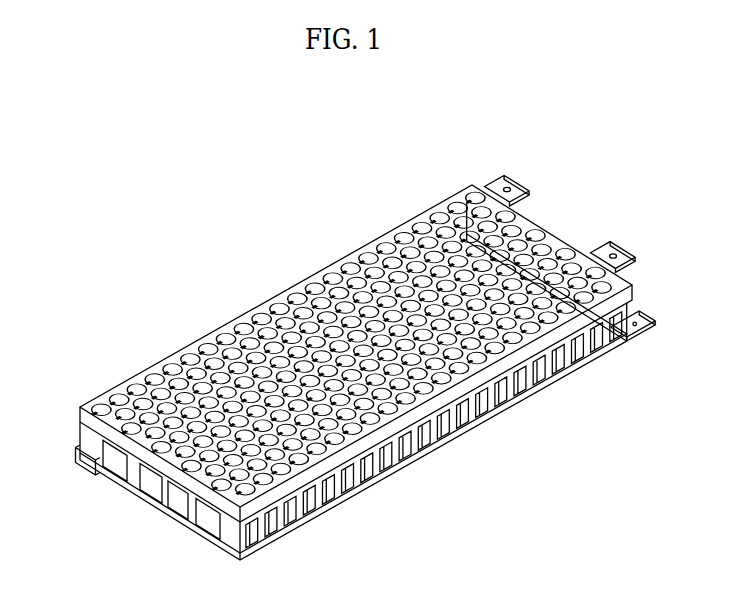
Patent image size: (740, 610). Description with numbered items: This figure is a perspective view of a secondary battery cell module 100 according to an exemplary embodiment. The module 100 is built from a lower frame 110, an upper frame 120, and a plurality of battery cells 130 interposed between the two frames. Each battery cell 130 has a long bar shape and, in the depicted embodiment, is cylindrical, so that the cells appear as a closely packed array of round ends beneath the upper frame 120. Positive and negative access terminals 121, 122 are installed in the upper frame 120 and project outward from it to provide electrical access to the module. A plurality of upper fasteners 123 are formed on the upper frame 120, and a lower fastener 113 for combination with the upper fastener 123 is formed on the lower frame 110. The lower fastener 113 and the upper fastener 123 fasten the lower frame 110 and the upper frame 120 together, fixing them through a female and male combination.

The secondary battery cell module 100 is at (343, 140).
The lower frame 110 is at (150, 507).
The lower fastener 113 is at (440, 432).
The upper frame 120 is at (80, 413).
The positive access terminal 121 is at (526, 187).
The negative access terminal 122 is at (628, 249).
The upper fastener 123 is at (440, 416).
The battery cell 130 is at (327, 493).